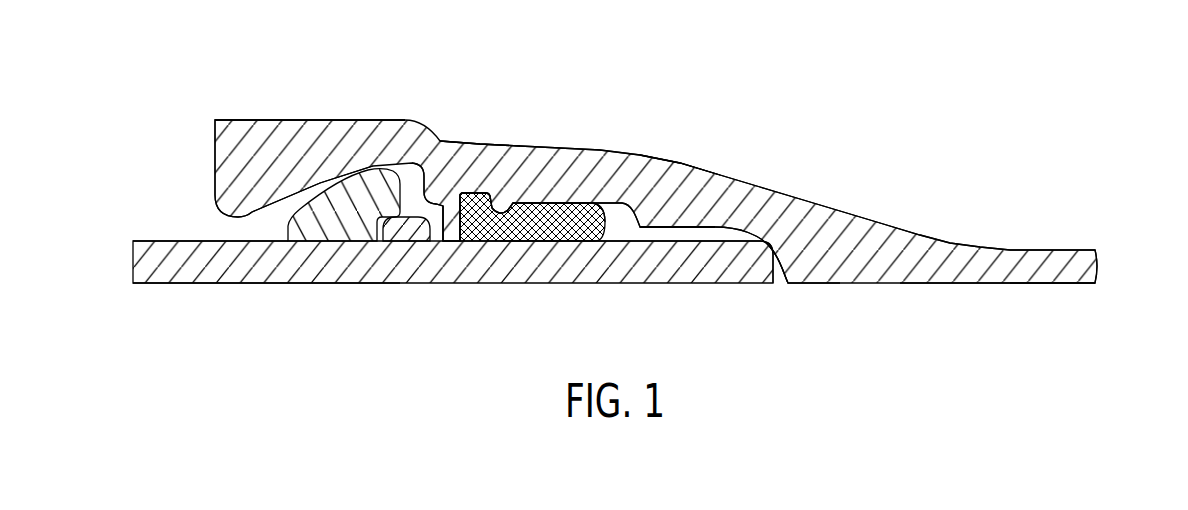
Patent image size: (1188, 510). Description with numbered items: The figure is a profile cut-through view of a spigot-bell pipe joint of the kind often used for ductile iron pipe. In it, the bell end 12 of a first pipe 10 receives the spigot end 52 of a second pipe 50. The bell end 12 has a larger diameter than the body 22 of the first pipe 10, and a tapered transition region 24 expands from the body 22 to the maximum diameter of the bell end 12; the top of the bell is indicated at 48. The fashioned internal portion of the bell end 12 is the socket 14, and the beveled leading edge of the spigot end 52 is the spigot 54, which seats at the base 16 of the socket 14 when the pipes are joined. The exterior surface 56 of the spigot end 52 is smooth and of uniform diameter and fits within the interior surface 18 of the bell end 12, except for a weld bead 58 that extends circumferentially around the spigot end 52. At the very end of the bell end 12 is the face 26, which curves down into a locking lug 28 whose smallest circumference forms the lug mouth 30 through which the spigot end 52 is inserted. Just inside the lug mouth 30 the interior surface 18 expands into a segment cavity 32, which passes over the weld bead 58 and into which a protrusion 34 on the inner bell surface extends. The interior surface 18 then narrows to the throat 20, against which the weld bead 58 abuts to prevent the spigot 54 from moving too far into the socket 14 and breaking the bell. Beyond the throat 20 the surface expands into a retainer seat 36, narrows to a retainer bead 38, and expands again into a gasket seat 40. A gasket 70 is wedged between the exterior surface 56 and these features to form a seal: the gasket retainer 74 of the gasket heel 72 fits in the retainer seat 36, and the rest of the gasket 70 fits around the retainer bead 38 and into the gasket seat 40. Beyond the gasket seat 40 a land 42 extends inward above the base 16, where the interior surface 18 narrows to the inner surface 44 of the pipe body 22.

The first pipe 10 is at (787, 123).
The bell end 12 is at (475, 150).
The socket 14 is at (772, 247).
The base of the socket 16 is at (793, 272).
The interior surface of the bell end 18 is at (568, 202).
The throat 20 is at (457, 235).
The body of the first pipe 22 is at (1063, 262).
The transition region 24 is at (841, 212).
The face 26 is at (214, 148).
The locking lug 28 is at (237, 207).
The lug mouth 30 is at (227, 225).
The segment cavity 32 is at (363, 165).
The protrusion 34 is at (427, 176).
The retainer seat 36 is at (483, 190).
The retainer bead 38 is at (527, 201).
The gasket seat 40 is at (634, 204).
The land 42 is at (688, 183).
The inner surface of the pipe body 44 is at (997, 285).
The top surface of head block 48 is at (368, 119).
The second pipe 50 is at (285, 295).
The spigot end 52 is at (692, 265).
The spigot 54 is at (772, 267).
The exterior surface of the spigot end 56 is at (622, 248).
The weld bead 58 is at (408, 241).
The gasket 70 is at (525, 232).
The gasket heel 72 is at (480, 228).
The gasket retainer 74 is at (463, 196).